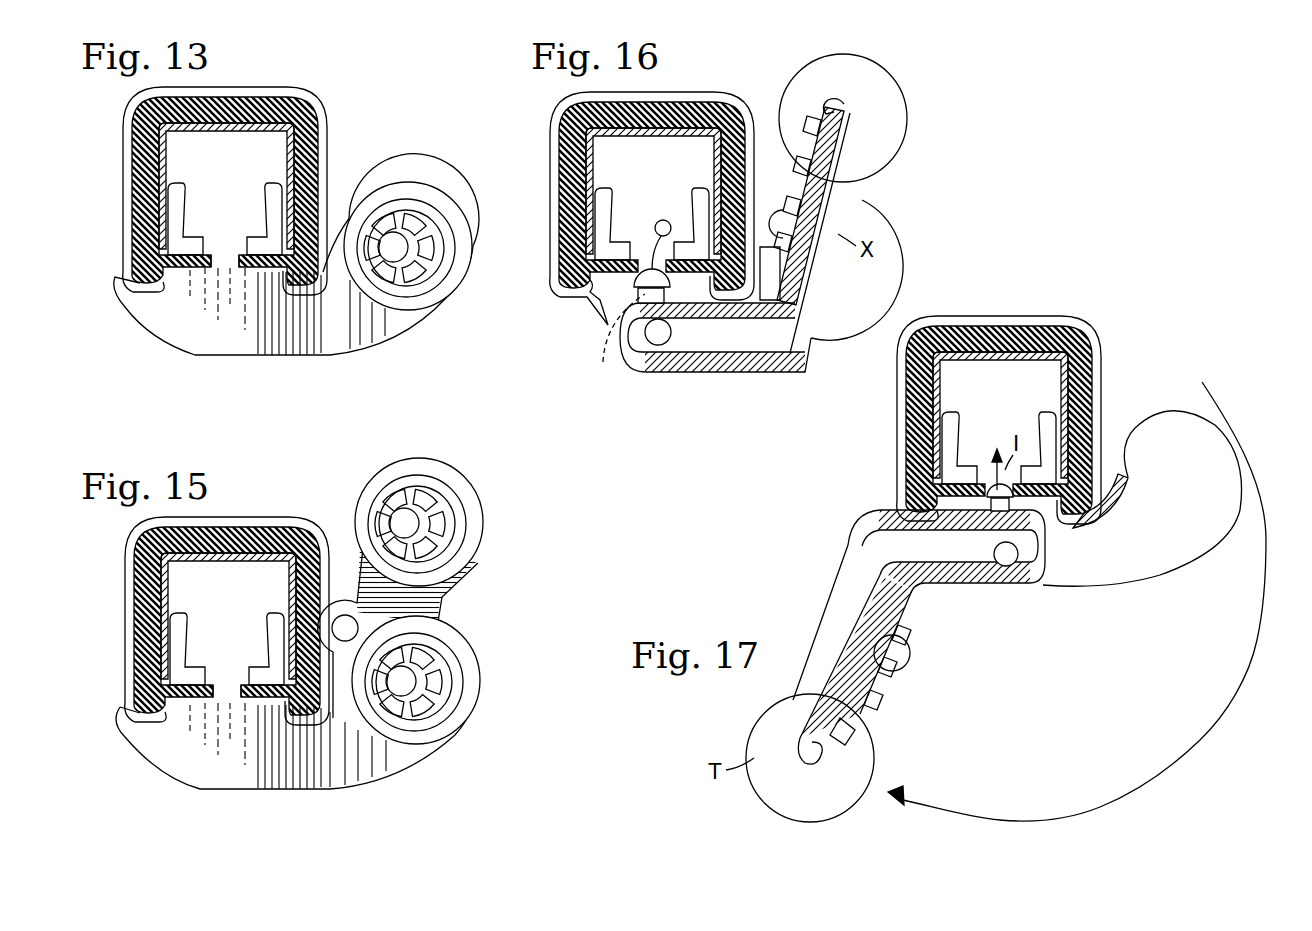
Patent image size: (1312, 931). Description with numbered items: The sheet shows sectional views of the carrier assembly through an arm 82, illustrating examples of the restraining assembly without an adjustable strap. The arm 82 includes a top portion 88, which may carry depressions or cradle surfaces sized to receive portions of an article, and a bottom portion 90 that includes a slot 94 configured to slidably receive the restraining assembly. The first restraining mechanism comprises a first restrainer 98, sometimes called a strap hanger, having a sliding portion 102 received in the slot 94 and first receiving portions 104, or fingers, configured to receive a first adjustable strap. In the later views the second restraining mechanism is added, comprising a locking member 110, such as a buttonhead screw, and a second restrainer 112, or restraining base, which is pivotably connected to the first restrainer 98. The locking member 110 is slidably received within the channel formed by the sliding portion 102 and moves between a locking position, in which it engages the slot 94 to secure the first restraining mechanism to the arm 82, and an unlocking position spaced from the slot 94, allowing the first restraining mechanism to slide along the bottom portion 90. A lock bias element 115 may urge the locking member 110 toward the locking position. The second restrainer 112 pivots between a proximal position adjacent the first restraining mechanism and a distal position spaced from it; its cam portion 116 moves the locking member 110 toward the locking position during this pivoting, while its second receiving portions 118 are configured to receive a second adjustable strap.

In FIG. 13, the arm 82 is at (264, 104).
In FIG. 15, the arm 82 is at (248, 535).
In FIG. 13, the top portion 88 is at (178, 90).
In FIG. 15, the top portion 88 is at (178, 522).
In FIG. 13, the bottom portion 90 is at (130, 267).
In FIG. 15, the bottom portion 90 is at (132, 697).
In FIG. 13, the slot 94 is at (215, 268).
In FIG. 15, the slot 94 is at (218, 700).
In FIG. 13, the first restrainer 98 is at (405, 330).
In FIG. 15, the first restrainer 98 is at (315, 775).
In FIG. 16, the first restrainer 98 is at (830, 328).
In FIG. 17, the first restrainer 98 is at (1168, 548).
In FIG. 13, the sliding portion 102 is at (265, 227).
In FIG. 15, the sliding portion 102 is at (266, 658).
In FIG. 13, the first receiving portions 104 is at (420, 268).
In FIG. 15, the first receiving portions 104 is at (418, 712).
In FIG. 16, the locking member 110 is at (628, 293).
In FIG. 17, the locking member 110 is at (985, 499).
In FIG. 15, the second restrainer 112 is at (445, 595).
In FIG. 16, the second restrainer 112 is at (818, 279).
In FIG. 17, the second restrainer 112 is at (832, 627).
In FIG. 16, the lock bias element 115 is at (614, 340).
In FIG. 17, the lock bias element 115 is at (1098, 423).
In FIG. 16, the cam portion 116 is at (688, 373).
In FIG. 17, the cam portion 116 is at (1052, 537).
In FIG. 15, the second receiving portions 118 is at (458, 525).